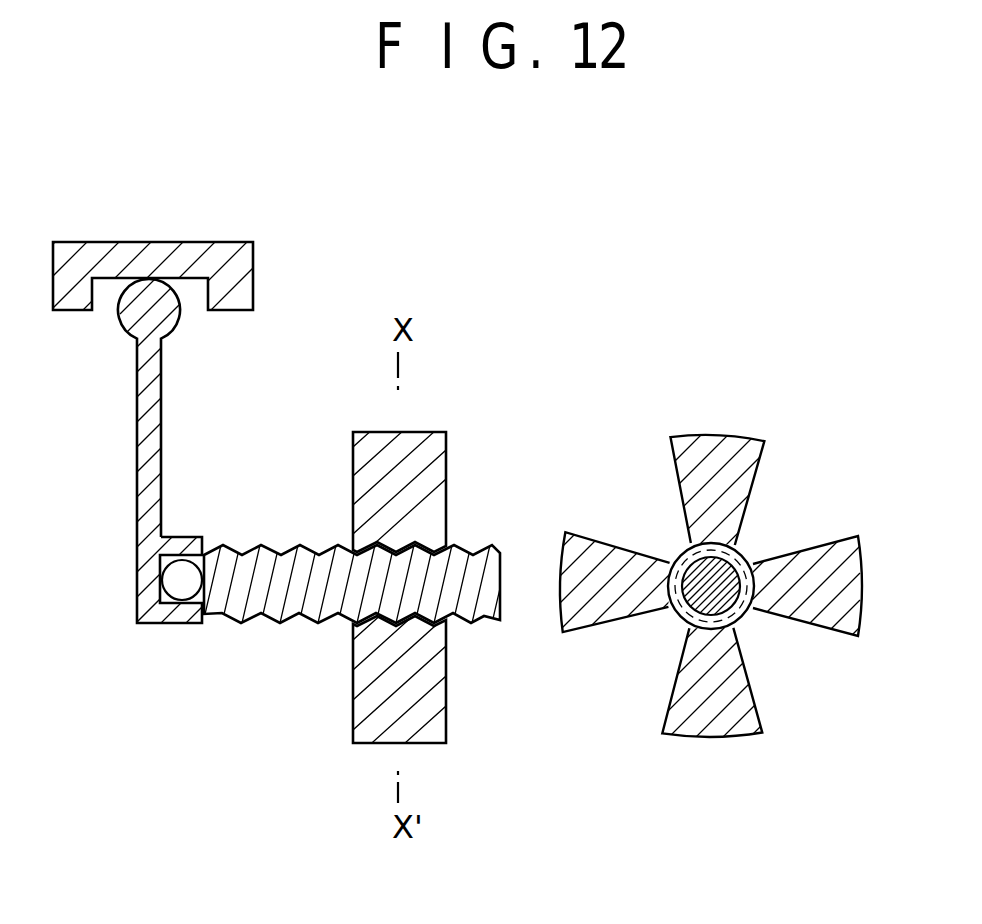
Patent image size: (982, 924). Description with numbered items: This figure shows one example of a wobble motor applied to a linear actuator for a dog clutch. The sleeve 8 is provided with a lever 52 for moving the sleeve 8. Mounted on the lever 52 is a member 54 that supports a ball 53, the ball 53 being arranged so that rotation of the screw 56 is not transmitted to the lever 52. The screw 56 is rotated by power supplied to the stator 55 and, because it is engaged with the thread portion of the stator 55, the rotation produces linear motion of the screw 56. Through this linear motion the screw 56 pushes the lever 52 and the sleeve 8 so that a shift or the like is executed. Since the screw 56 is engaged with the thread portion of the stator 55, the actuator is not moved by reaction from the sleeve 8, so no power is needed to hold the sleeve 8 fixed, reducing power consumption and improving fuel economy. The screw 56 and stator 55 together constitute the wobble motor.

The sleeve 8 is at (250, 257).
The lever 52 is at (159, 432).
The ball 53 is at (183, 592).
The member for supporting the ball 54 is at (165, 618).
The stator 55 is at (668, 713).
The screw 56 is at (484, 622).